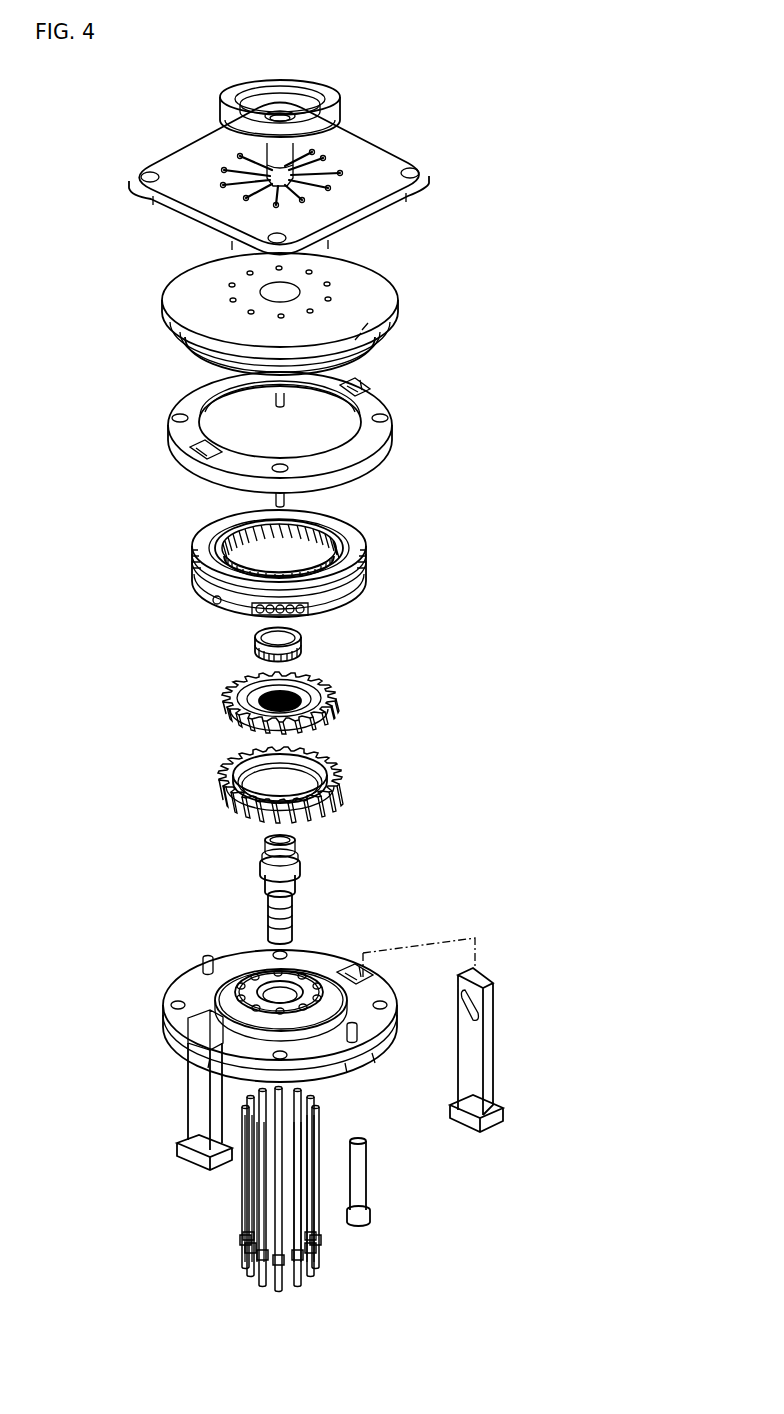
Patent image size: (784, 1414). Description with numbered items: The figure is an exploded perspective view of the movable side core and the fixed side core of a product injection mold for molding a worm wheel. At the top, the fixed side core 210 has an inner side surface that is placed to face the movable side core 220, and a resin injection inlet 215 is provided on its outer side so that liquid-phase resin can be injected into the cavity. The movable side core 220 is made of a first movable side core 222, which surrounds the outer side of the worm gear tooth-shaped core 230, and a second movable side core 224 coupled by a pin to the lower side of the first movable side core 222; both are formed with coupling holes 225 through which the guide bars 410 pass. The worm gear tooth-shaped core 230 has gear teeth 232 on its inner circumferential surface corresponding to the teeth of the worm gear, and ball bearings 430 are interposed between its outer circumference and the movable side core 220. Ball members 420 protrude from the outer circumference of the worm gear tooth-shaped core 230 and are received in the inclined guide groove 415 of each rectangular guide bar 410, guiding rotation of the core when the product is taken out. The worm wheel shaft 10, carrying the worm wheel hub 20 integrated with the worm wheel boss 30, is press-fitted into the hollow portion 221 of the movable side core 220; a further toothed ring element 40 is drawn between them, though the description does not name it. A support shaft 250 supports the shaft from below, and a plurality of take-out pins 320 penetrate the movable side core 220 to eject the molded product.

The worm wheel shaft 10 is at (270, 880).
The worm wheel hub 20 is at (305, 655).
The worm wheel boss 30 is at (225, 690).
The second gear 40 is at (225, 755).
The fixed side core 210 is at (180, 268).
The resin injection inlet 215 is at (330, 102).
The movable side core 220 is at (370, 718).
The hollow portion 221 is at (235, 978).
The first movable side core 222 is at (352, 467).
The second movable side core 224 is at (321, 875).
The coupling holes 225 is at (355, 383).
The worm gear tooth-shaped core 230 is at (211, 560).
The gear teeth 232 is at (240, 522).
The support shaft 250 is at (365, 1178).
The take-out pins 320 is at (248, 1200).
The guide bars 410 is at (195, 1103).
The guide groove 415 is at (470, 1030).
The ball members 420 is at (213, 602).
The ball bearings 430 is at (192, 558).